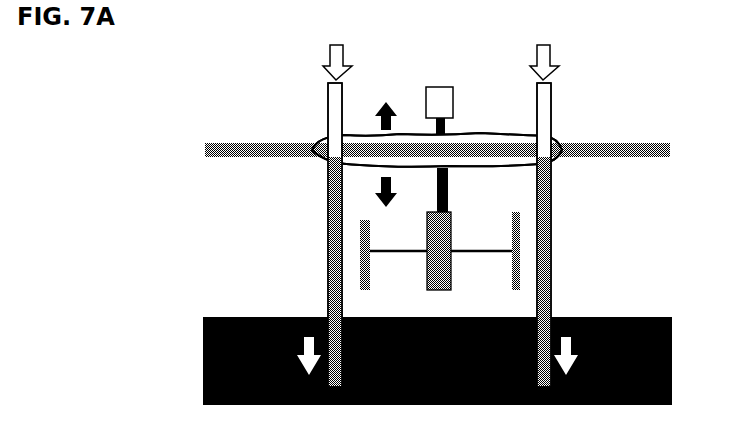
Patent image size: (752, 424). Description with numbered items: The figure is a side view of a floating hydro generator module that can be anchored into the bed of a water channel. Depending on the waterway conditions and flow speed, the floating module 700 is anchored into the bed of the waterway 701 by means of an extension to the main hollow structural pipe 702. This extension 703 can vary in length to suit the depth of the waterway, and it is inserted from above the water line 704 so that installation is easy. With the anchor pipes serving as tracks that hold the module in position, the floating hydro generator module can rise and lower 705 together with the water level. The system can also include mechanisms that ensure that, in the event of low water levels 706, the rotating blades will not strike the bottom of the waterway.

The floating module 700 is at (325, 138).
The bed of the waterway 701 is at (568, 347).
The main hollow structural pipe 702 is at (328, 203).
The extension 703 is at (550, 268).
The water line 704 is at (316, 66).
The rise and lower 705 is at (395, 108).
The low water levels 706 is at (603, 150).